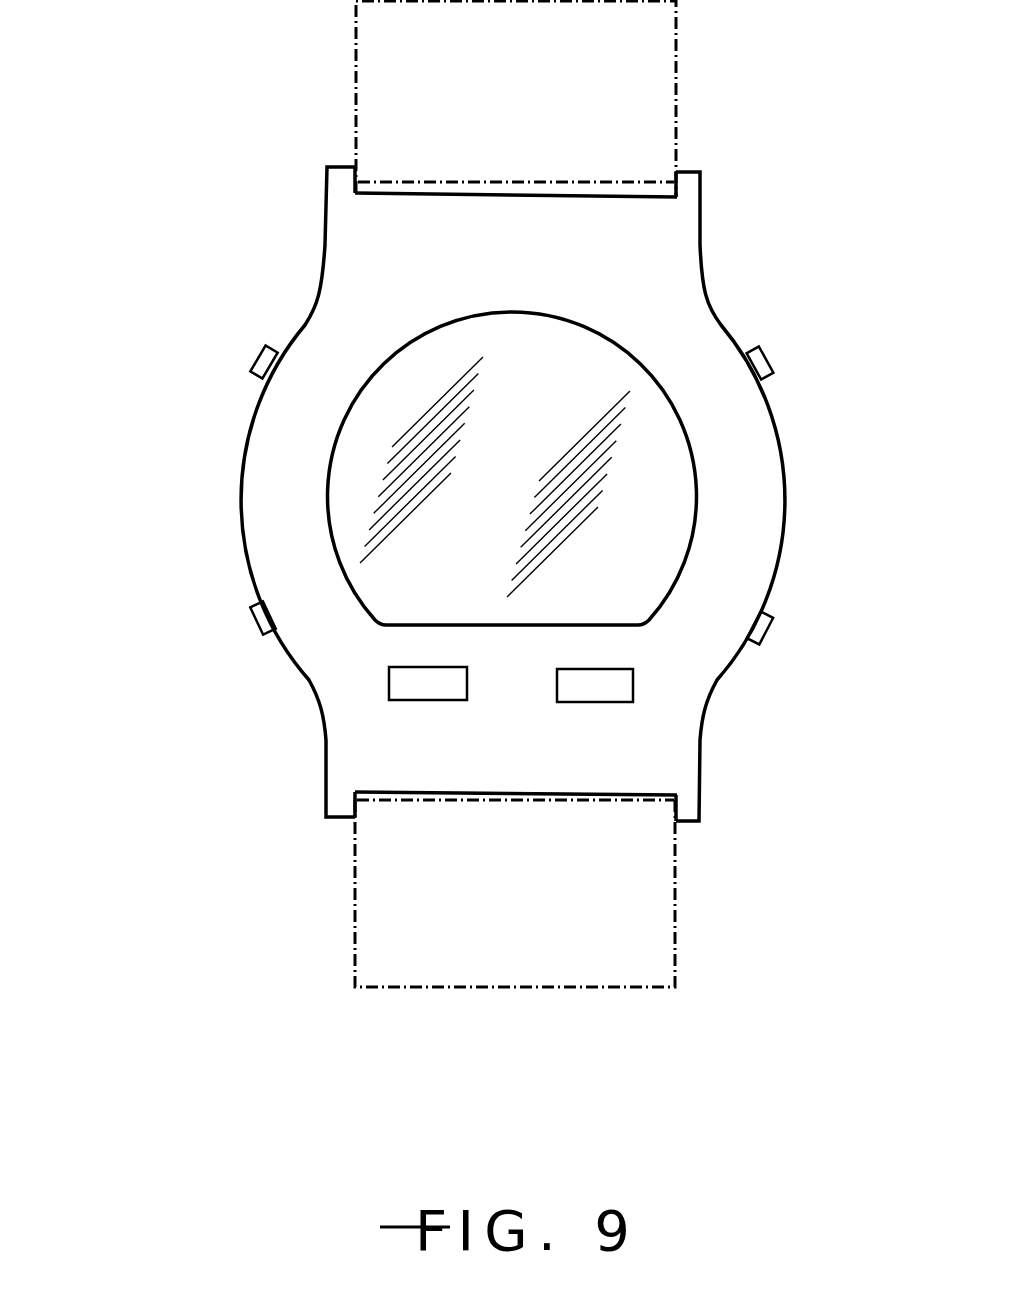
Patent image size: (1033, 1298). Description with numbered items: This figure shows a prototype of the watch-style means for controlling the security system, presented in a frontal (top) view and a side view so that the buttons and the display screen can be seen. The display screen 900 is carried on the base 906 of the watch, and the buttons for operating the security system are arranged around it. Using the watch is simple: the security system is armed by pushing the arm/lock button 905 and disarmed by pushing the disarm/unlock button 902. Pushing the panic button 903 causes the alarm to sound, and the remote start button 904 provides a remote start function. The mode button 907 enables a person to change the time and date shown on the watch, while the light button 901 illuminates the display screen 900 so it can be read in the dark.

The display screen 900 is at (658, 508).
The light button 901 is at (388, 683).
The disarm/unlock button 902 is at (772, 362).
The panic button 903 is at (767, 633).
The remote start button 904 is at (268, 637).
The arm/lock button 905 is at (253, 352).
The base 906 is at (200, 153).
The mode button 907 is at (633, 685).